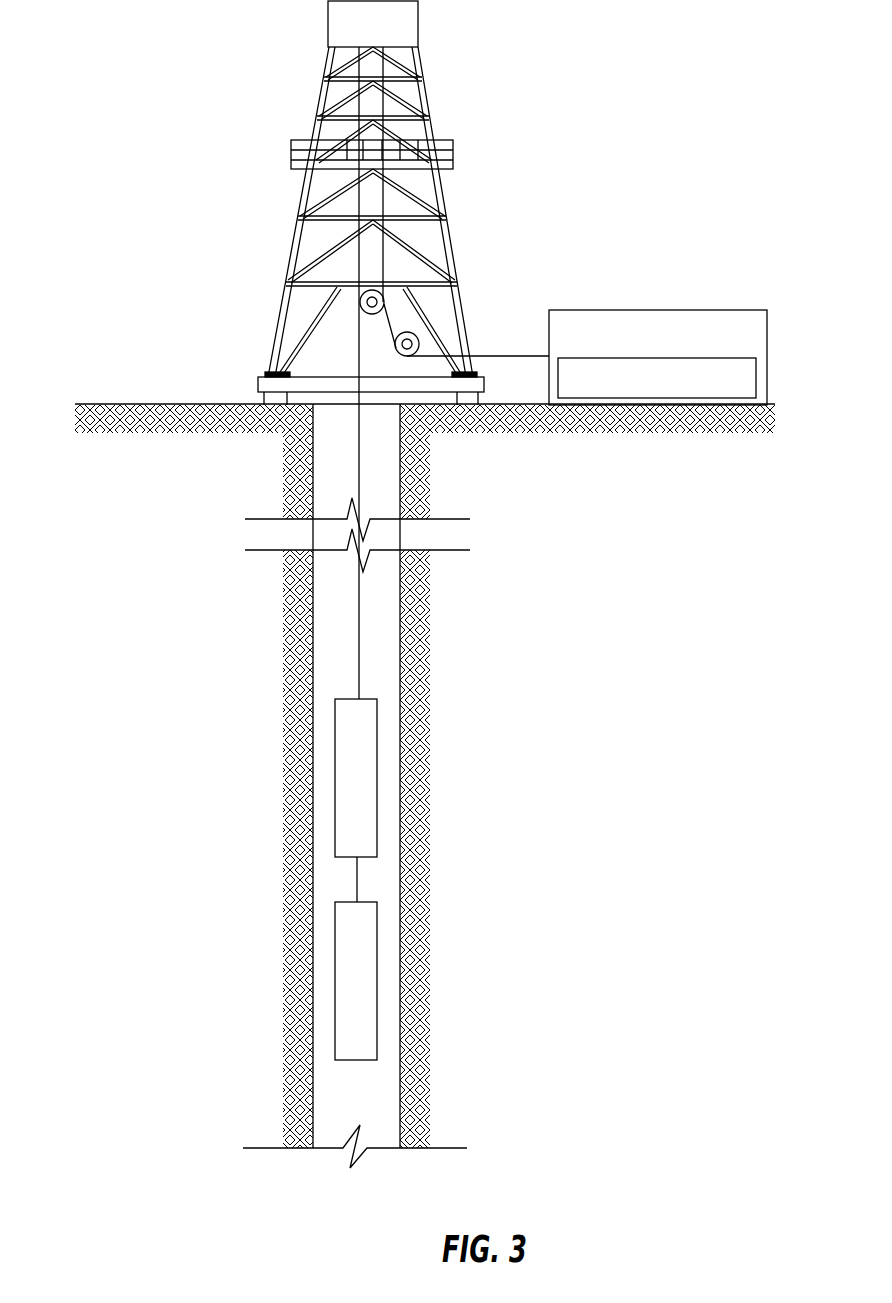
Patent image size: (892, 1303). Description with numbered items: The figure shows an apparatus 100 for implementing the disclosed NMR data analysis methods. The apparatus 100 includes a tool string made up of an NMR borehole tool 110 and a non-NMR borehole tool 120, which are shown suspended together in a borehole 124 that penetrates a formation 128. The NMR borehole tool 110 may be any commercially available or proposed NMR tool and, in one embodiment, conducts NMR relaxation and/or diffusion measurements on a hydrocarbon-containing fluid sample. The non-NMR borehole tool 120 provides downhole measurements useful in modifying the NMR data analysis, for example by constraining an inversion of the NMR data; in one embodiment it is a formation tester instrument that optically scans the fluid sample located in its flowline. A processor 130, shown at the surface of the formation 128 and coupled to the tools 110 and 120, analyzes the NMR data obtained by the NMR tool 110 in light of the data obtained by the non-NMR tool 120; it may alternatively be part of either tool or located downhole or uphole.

The apparatus 100 is at (592, 432).
The NMR borehole tool 110 is at (378, 773).
The non-NMR borehole tool 120 is at (378, 988).
The borehole 124 is at (403, 640).
The formation 128 is at (413, 685).
The processor 130 is at (658, 357).